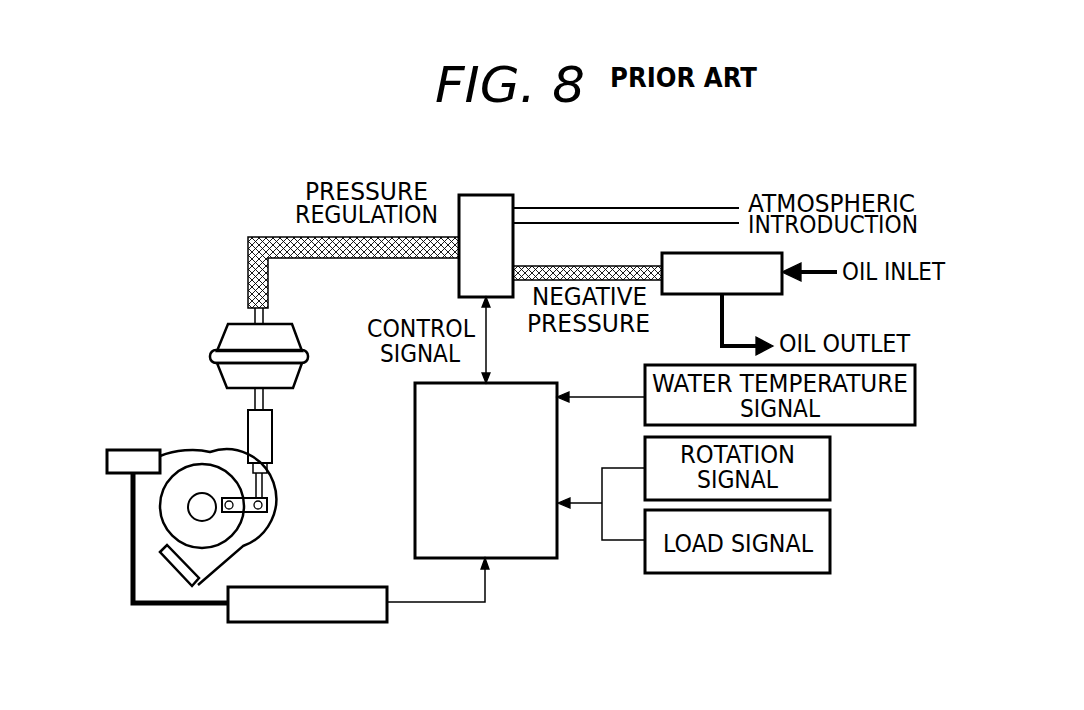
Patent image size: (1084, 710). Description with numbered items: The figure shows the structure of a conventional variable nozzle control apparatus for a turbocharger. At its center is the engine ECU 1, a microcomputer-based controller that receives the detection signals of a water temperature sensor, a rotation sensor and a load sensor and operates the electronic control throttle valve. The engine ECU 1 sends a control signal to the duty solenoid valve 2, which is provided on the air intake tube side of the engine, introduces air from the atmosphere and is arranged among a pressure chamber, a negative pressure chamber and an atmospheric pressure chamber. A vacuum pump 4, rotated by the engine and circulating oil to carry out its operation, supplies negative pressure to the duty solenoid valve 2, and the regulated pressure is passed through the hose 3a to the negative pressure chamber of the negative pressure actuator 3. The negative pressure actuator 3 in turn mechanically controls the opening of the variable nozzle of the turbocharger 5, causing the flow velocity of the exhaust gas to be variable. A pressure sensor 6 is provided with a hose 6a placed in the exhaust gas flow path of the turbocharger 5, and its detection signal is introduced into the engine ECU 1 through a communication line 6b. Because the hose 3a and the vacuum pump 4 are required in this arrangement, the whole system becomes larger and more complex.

The engine ECU 1 is at (534, 560).
The duty solenoid valve 2 is at (500, 195).
The negative pressure actuator 3 is at (232, 337).
The hose 3a is at (330, 259).
The vacuum pump 4 is at (770, 294).
The turbocharger 5 is at (240, 535).
The hose 6a is at (133, 538).
The pressure sensor 6 is at (242, 624).
The communication line 6b is at (400, 604).